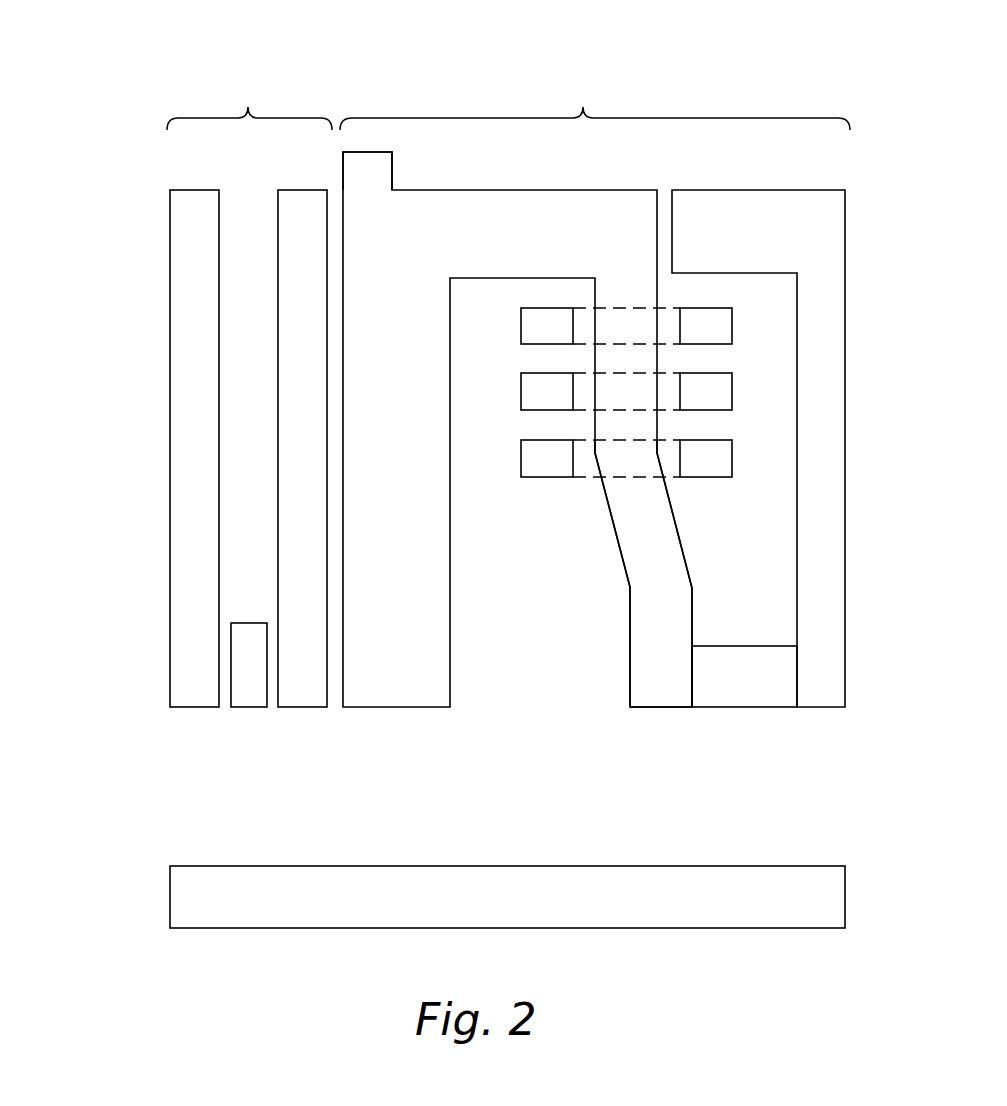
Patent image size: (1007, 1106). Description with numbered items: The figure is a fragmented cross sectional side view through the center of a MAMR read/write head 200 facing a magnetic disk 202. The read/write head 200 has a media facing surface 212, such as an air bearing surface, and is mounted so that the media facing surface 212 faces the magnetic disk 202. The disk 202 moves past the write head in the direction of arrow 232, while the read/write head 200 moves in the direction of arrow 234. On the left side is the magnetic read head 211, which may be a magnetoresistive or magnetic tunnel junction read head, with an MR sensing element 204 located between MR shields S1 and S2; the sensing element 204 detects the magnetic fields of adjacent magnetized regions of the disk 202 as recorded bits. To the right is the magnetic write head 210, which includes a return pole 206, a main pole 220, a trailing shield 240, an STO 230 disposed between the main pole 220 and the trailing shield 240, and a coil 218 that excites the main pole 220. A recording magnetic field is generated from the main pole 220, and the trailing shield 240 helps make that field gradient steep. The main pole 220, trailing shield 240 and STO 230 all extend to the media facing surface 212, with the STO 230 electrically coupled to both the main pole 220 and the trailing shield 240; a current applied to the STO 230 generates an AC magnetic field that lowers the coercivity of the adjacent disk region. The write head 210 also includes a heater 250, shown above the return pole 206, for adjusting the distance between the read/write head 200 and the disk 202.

The MAMR read/write head 200 is at (168, 34).
The magnetic disk 202 is at (833, 898).
The MR sensing element 204 is at (242, 707).
The return pole 206 is at (372, 707).
The magnetic write head 210 is at (595, 104).
The magnetic read head 211 is at (249, 104).
The media facing surface 212 is at (667, 707).
The coil 218 is at (545, 477).
The main pole 220 is at (648, 647).
The STO 230 is at (743, 688).
The arrow 232 is at (705, 845).
The arrow 234 is at (82, 368).
The trailing shield 240 is at (835, 673).
The heater 250 is at (383, 166).
The MR shield S1 is at (192, 707).
The MR shield S2 is at (285, 707).